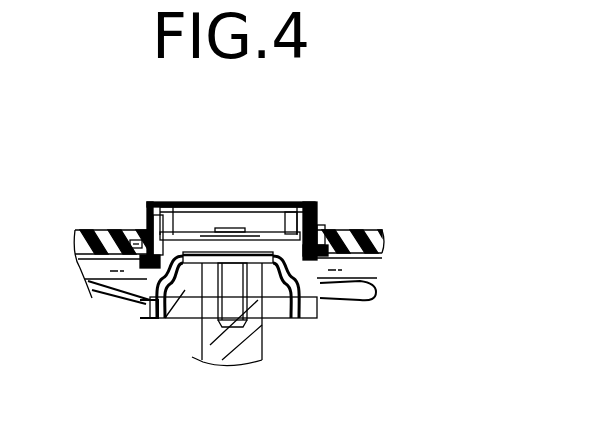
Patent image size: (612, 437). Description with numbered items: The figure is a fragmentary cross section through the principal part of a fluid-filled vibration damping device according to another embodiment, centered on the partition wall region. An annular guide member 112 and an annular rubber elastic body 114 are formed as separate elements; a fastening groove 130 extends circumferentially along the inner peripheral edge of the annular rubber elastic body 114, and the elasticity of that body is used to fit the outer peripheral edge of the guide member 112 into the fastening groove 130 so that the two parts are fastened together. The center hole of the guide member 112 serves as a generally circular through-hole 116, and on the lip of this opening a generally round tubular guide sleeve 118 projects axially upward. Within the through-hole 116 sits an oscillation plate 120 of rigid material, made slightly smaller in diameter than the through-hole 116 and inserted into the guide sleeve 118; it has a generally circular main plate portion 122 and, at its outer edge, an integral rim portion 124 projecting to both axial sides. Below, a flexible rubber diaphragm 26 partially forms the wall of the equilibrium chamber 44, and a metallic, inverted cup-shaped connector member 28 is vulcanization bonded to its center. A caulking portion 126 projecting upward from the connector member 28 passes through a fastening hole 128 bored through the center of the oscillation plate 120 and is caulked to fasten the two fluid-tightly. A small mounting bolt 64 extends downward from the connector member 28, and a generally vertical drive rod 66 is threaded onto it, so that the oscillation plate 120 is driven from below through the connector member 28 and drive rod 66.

The diaphragm 26 is at (348, 305).
The connector member 28 is at (198, 268).
The equilibrium chamber 44 is at (87, 296).
The mounting bolt 64 is at (236, 297).
The drive rod 66 is at (224, 346).
The guide member 112 is at (320, 228).
The annular rubber elastic body 114 is at (353, 230).
The through-hole 116 is at (175, 201).
The guide sleeve 118 is at (142, 225).
The oscillation plate 120 is at (196, 195).
The main plate portion 122 is at (275, 218).
The rim portion 124 is at (138, 300).
The caulking portion 126 is at (221, 230).
The fastening hole 128 is at (230, 225).
The fastening groove 130 is at (128, 236).